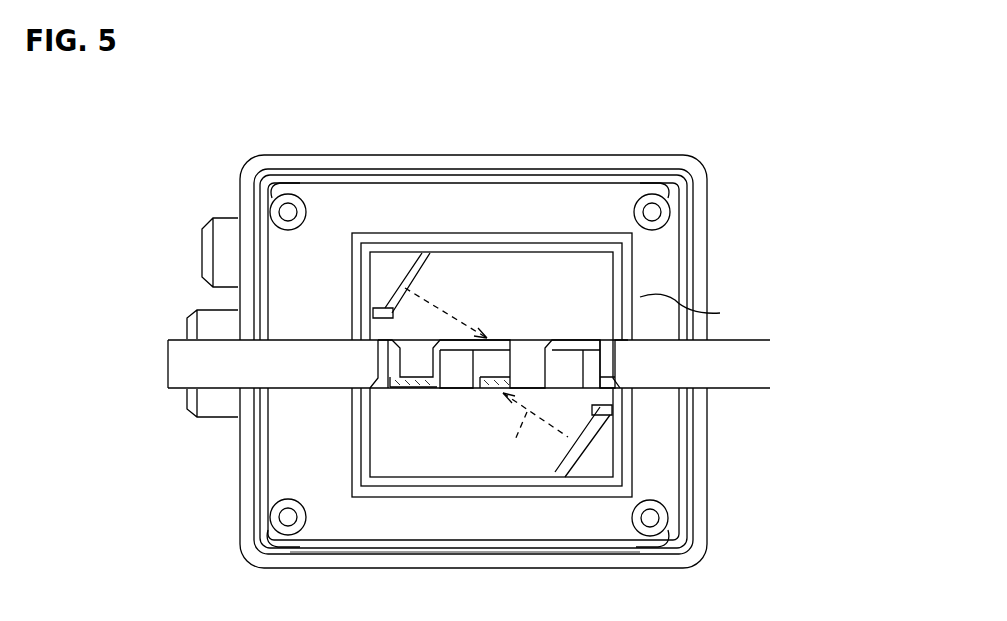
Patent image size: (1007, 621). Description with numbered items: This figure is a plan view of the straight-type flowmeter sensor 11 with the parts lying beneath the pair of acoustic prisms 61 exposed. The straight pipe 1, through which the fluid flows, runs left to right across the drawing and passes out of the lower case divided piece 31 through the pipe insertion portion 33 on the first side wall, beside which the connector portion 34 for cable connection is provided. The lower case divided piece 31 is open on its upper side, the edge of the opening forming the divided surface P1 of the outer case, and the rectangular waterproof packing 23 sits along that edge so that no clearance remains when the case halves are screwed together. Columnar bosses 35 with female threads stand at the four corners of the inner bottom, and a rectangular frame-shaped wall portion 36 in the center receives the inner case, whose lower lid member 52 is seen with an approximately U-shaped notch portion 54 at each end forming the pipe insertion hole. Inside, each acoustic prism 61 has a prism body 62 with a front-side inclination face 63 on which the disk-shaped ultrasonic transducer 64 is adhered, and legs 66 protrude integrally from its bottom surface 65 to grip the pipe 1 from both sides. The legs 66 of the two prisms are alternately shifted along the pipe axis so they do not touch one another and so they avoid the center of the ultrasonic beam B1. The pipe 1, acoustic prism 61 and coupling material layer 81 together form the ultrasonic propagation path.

The straight-type flowmeter sensor 11 is at (118, 157).
The pipe 1 is at (747, 380).
The lower case divided piece 31 is at (707, 197).
The lower lid member 52 is at (640, 263).
The wall portion 36 is at (699, 310).
The boss 35 is at (303, 205).
The connector portion 34 is at (223, 228).
The pipe insertion portion 33 is at (212, 410).
The acoustic prism 61 is at (510, 250).
The prism body 62 is at (461, 272).
The front-side inclination face 63 is at (378, 313).
The ultrasonic transducer 64 is at (413, 283).
The bottom surface 65 is at (602, 372).
The leg 66 is at (453, 353).
The coupling material layer 81 is at (498, 340).
The notch portion 54 is at (367, 383).
The waterproof packing 23 is at (467, 555).
The ultrasonic beam B1 is at (497, 453).
The divided surface P1 is at (702, 570).